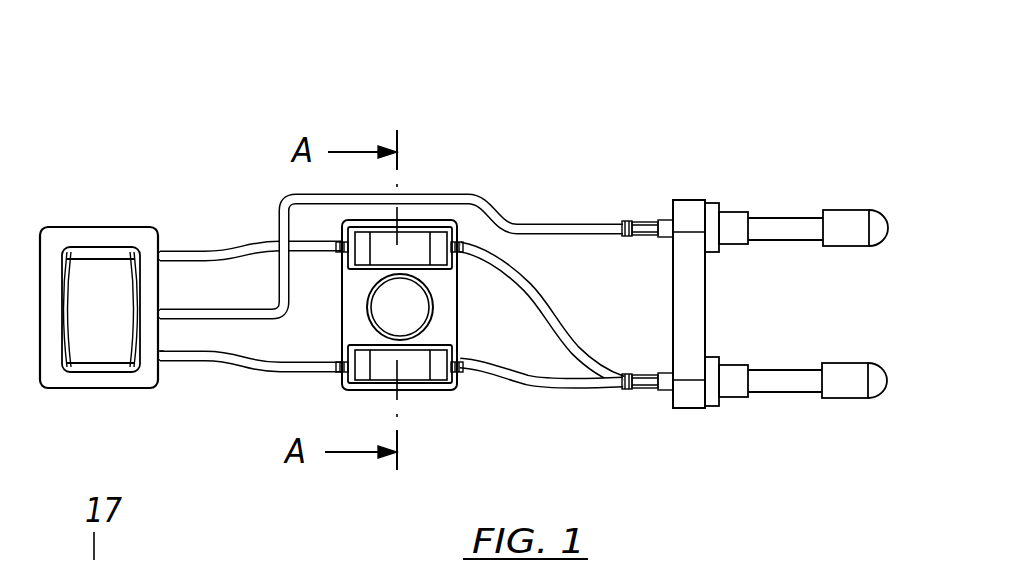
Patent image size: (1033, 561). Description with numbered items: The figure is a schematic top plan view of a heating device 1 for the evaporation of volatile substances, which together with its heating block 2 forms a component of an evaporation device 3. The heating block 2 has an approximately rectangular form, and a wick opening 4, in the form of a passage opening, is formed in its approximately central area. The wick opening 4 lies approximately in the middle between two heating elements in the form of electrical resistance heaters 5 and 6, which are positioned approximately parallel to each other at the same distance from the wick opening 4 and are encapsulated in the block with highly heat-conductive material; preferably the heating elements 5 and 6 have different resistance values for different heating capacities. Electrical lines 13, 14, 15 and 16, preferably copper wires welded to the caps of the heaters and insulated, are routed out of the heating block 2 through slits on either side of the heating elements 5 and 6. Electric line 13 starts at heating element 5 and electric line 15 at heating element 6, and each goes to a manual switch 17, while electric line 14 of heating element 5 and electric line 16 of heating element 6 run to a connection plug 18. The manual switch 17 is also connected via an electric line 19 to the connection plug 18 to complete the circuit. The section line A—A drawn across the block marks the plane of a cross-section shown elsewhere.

The heating device 1 is at (442, 287).
The heating block 2 is at (410, 310).
The evaporation device 3 is at (730, 270).
The wick opening 4 is at (449, 315).
The heating element 5 is at (418, 238).
The heating element 6 is at (417, 365).
The electric line 13 is at (215, 259).
The electric line 14 is at (569, 335).
The electric line 15 is at (216, 364).
The electric line 16 is at (565, 390).
The manual switch 17 is at (92, 329).
The connection plug 18 is at (729, 394).
The electric line 19 is at (552, 227).